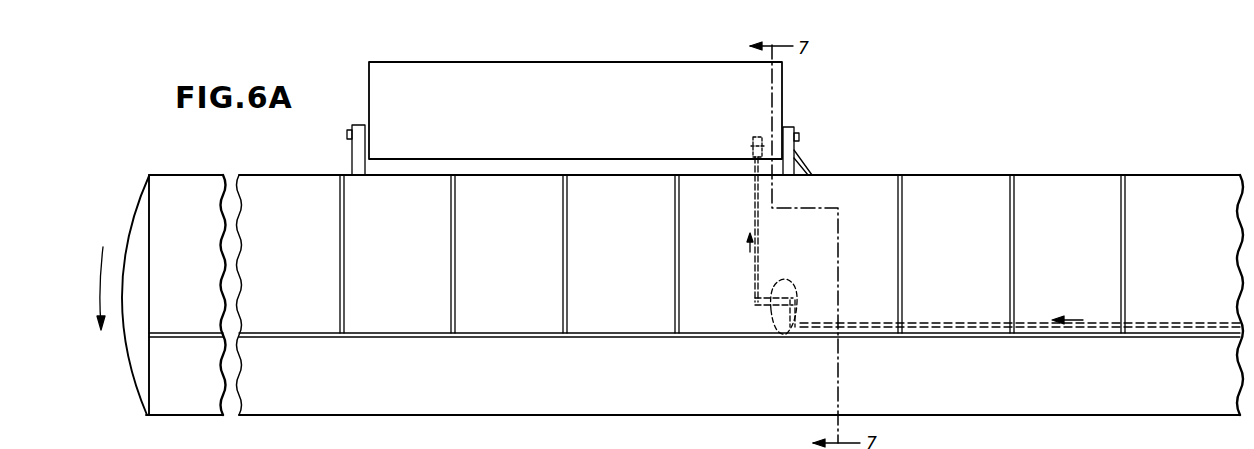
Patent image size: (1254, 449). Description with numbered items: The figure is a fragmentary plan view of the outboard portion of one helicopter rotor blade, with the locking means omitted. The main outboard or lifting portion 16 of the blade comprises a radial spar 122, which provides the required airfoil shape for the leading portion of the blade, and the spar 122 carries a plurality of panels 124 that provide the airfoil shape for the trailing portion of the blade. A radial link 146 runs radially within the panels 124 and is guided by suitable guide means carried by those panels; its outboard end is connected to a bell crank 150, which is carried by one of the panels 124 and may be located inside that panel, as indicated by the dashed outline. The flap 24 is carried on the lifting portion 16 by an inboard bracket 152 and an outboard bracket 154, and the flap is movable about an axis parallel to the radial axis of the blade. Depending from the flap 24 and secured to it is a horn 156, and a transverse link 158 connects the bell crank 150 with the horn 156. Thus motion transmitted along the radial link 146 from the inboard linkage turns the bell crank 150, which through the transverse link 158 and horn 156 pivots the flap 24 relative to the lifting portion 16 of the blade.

The main outboard or lifting portion 16 is at (1028, 416).
The flap 24 is at (762, 96).
The radial spar 122 is at (537, 401).
The panels 124 is at (279, 187).
The radial link 146 is at (951, 326).
The bell crank 150 is at (806, 313).
The inboard bracket 152 is at (790, 148).
The outboard bracket 154 is at (357, 160).
The horn 156 is at (757, 131).
The transverse link 158 is at (759, 228).